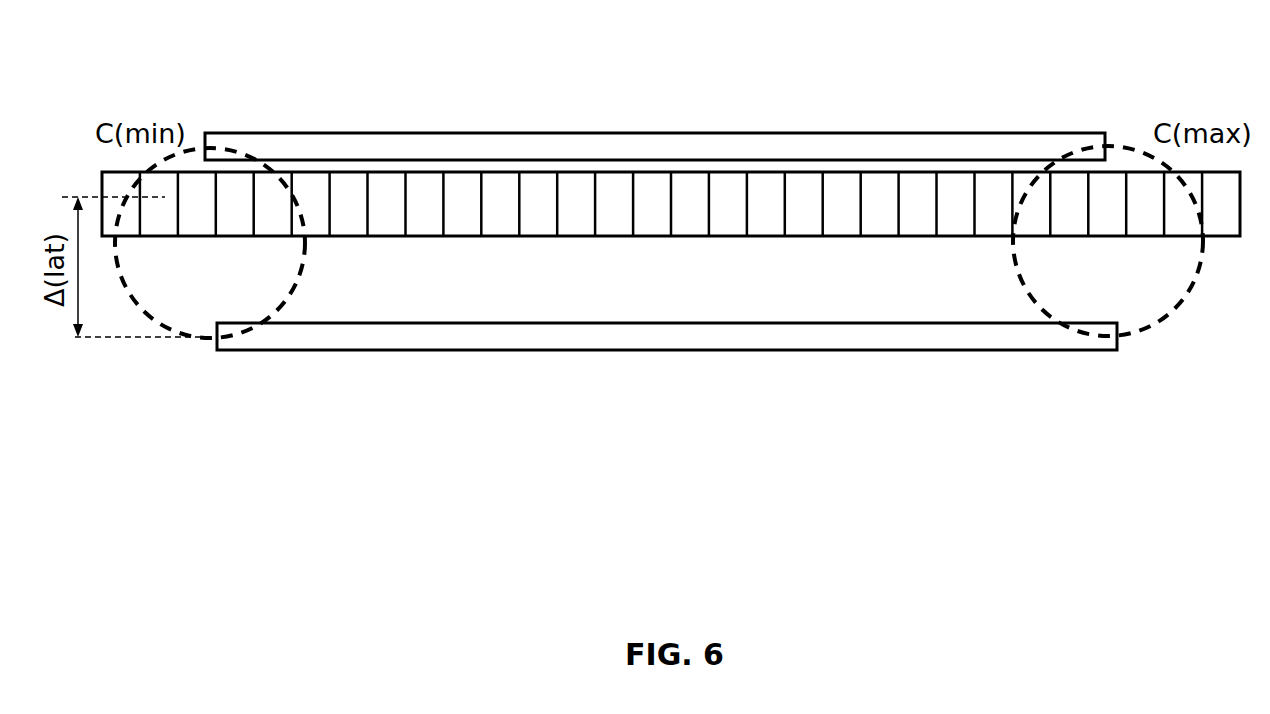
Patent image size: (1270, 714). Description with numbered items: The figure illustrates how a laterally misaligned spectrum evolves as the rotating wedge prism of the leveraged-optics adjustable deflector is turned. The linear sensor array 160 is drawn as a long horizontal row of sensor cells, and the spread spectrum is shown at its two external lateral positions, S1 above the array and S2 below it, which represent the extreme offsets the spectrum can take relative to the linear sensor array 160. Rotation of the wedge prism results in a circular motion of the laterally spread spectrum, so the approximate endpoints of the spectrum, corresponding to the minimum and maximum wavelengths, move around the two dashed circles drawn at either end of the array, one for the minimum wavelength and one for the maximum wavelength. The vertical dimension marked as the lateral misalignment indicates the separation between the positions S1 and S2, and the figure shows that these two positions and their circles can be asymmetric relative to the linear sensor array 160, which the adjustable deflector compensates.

The linear sensor array 160 is at (617, 183).
The first external lateral position of the spectrum S1 is at (937, 133).
The second external lateral position of the spectrum S2 is at (785, 350).